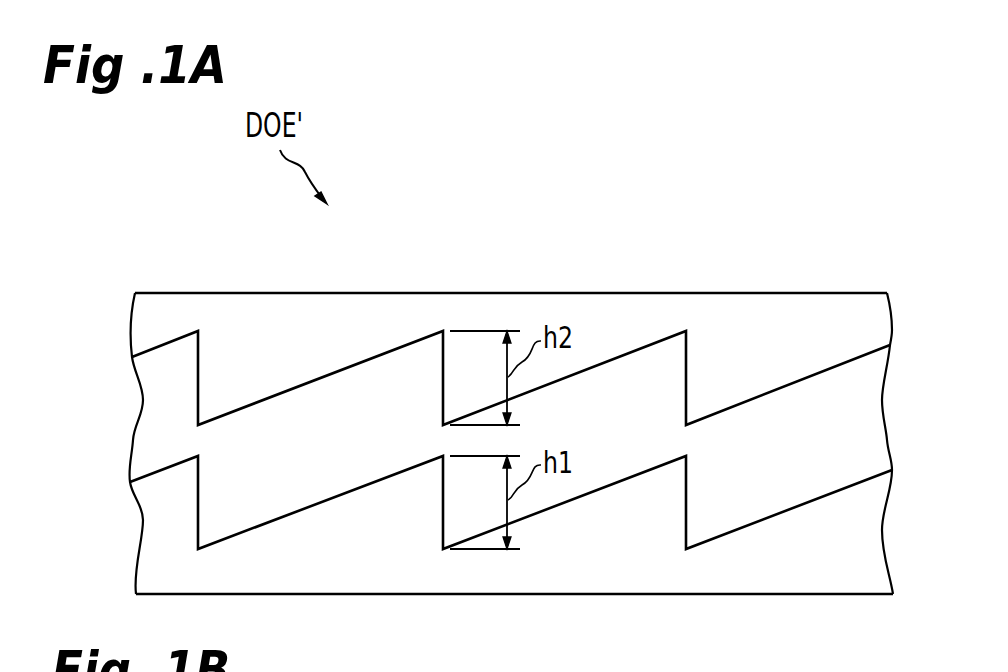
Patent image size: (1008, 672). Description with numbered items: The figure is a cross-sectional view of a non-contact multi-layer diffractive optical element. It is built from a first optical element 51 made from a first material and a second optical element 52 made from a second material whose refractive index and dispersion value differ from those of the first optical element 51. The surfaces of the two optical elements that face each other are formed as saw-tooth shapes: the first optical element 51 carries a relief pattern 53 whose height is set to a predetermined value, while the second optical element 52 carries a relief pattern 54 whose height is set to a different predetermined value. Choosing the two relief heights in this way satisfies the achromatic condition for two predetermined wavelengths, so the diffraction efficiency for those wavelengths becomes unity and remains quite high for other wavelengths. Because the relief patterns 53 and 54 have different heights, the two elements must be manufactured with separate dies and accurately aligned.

The first optical element 51 is at (625, 583).
The second optical element 52 is at (603, 299).
The relief pattern 53 is at (303, 509).
The relief pattern 54 is at (368, 360).